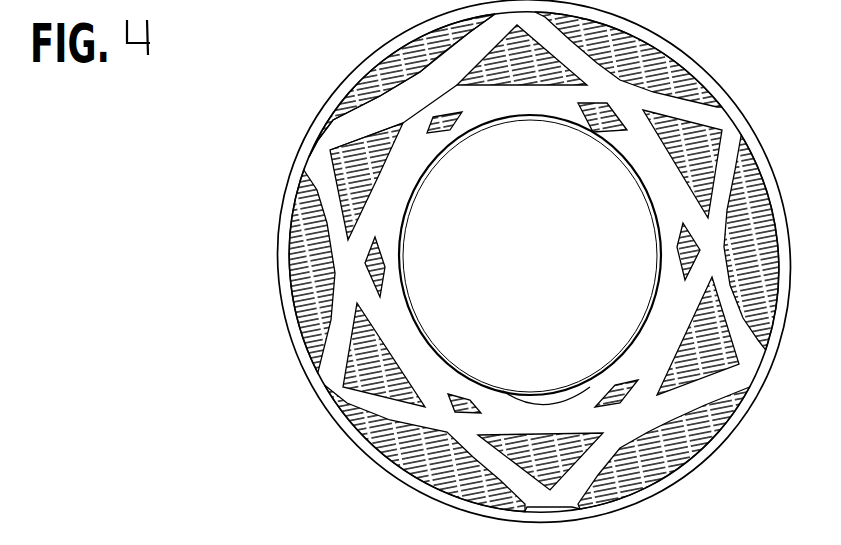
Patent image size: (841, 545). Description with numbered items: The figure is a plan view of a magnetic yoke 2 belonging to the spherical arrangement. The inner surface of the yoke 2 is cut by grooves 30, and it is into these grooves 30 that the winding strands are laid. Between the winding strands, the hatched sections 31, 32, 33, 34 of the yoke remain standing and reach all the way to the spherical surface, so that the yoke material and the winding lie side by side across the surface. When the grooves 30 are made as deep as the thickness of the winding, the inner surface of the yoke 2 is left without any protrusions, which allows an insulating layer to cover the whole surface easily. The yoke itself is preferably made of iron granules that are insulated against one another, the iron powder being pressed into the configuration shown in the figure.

The magnetic yoke 2 is at (360, 72).
The grooves 30 is at (357, 125).
The hatched section 31 is at (357, 172).
The hatched section 32 is at (398, 201).
The hatched section 33 is at (372, 263).
The hatched section 34 is at (316, 316).